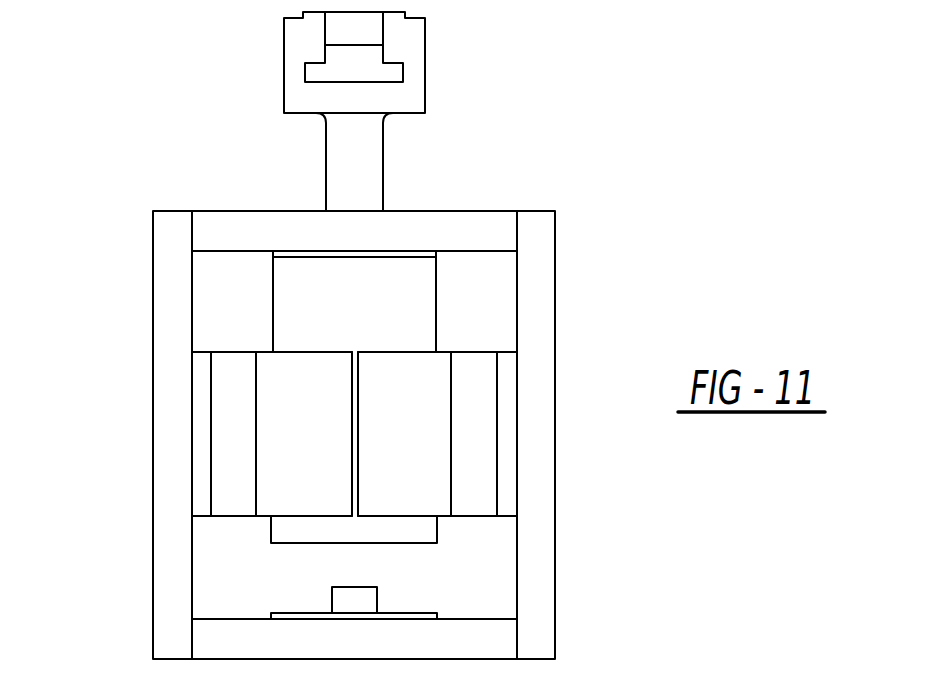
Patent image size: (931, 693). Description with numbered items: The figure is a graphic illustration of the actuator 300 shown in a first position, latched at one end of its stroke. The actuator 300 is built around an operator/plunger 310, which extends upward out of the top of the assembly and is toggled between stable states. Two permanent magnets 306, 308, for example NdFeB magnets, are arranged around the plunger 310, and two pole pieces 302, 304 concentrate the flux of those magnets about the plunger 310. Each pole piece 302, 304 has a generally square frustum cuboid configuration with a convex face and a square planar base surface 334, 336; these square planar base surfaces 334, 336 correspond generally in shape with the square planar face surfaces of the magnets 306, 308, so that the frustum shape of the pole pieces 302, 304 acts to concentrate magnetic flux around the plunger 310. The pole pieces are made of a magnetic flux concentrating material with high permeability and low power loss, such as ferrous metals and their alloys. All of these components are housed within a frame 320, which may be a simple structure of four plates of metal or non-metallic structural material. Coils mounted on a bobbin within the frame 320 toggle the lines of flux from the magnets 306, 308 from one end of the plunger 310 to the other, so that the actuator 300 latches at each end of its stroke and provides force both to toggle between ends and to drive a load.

The actuator 300 is at (653, 168).
The operator/plunger 310 is at (353, 155).
The pole piece 304 is at (405, 373).
The permanent magnet 308 is at (503, 402).
The square planar base surface 334 is at (212, 366).
The permanent magnet 306 is at (203, 433).
The pole piece 302 is at (302, 482).
The square planar base surface 336 is at (516, 470).
The frame 320 is at (555, 543).